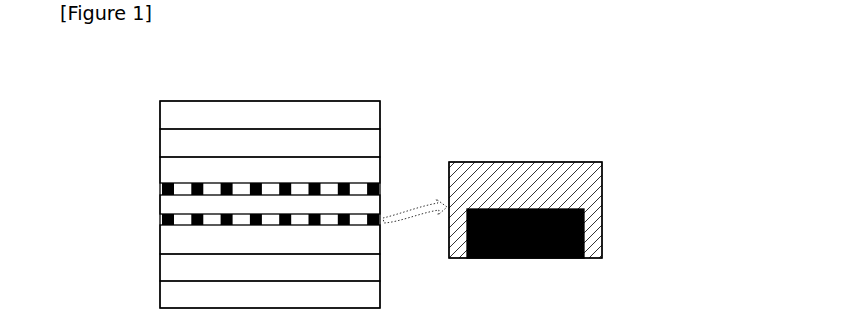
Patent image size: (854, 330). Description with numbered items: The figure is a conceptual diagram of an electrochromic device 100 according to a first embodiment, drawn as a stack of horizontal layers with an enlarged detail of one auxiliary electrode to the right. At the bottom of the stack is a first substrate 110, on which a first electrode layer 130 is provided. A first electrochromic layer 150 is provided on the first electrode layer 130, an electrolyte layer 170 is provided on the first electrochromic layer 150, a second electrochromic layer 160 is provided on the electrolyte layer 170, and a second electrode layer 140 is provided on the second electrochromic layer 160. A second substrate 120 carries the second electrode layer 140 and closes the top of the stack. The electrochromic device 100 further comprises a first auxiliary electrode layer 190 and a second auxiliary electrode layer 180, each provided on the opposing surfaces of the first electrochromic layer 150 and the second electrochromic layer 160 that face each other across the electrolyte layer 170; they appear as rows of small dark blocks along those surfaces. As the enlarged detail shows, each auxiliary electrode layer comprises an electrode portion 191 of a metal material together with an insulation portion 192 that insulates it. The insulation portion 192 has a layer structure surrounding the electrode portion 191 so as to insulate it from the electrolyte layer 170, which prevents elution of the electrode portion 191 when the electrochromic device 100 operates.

The electrochromic device 100 is at (103, 82).
The first substrate 110 is at (380, 293).
The second substrate 120 is at (380, 113).
The first electrode layer 130 is at (380, 265).
The second electrode layer 140 is at (380, 145).
The first electrochromic layer 150 is at (380, 236).
The second electrochromic layer 160 is at (380, 173).
The electrolyte layer 170 is at (160, 205).
The second auxiliary electrode layer 180 is at (194, 183).
The first auxiliary electrode layer 190 is at (194, 226).
The electrode portion 191 is at (524, 258).
The insulation portion 192 is at (602, 176).